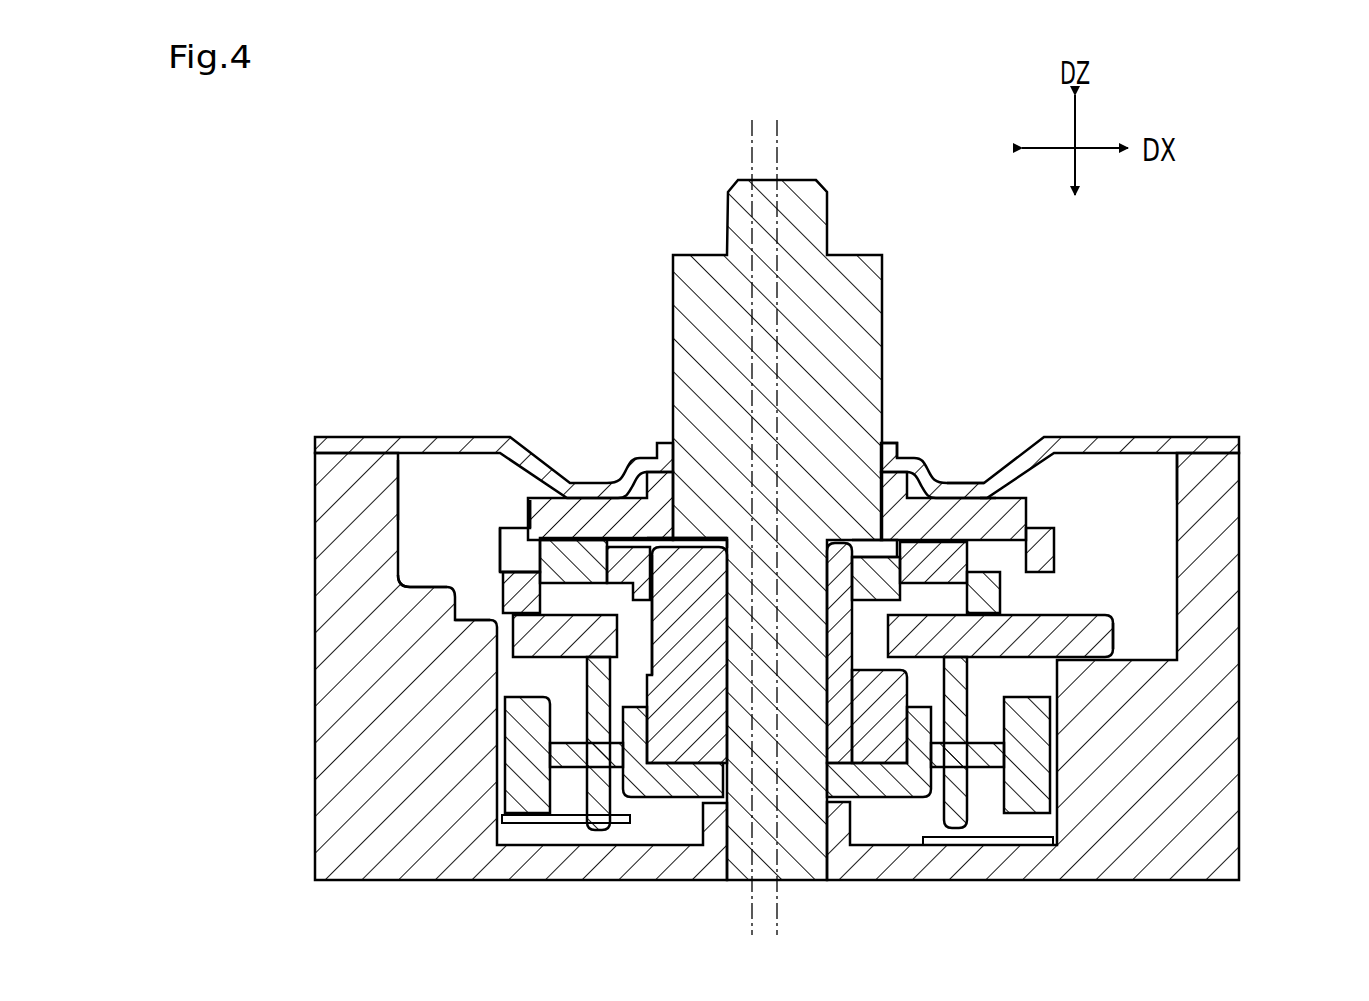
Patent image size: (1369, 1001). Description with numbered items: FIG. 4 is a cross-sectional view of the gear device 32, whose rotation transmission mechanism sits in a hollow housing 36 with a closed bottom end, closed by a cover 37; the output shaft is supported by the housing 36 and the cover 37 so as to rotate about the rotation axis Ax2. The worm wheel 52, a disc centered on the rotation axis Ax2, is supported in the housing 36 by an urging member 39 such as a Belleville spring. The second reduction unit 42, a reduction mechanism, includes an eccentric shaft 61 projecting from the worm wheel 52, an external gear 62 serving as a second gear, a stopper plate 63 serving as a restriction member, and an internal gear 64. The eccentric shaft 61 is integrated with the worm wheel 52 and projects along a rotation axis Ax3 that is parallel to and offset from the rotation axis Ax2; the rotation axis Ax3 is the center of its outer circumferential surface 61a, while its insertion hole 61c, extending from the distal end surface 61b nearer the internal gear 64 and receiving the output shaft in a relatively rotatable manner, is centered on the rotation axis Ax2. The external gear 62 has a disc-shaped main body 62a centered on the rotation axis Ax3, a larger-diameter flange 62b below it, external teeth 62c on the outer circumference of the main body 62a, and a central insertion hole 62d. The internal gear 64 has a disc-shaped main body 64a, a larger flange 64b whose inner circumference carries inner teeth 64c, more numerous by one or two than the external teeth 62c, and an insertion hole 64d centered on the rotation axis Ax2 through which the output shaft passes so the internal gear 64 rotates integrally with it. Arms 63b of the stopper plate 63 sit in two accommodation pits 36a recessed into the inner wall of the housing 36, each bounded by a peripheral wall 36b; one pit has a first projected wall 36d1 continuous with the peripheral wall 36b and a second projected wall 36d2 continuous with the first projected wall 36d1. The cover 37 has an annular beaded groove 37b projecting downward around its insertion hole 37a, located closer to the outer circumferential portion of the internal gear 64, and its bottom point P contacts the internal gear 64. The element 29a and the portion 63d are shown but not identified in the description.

The shaft 29a is at (883, 266).
The gear device 32 is at (521, 256).
The second reduction unit 42 is at (417, 359).
The housing 36 is at (1241, 496).
The accommodation pit 36a is at (1176, 482).
The peripheral wall 36b is at (408, 492).
The first projected wall 36d1 is at (435, 583).
The second projected wall 36d2 is at (473, 617).
The cover 37 is at (1100, 436).
The insertion hole 37a is at (883, 440).
The groove 37b is at (968, 482).
The urging member 39 is at (1002, 846).
The worm wheel 52 is at (1052, 750).
The eccentric shaft 61 is at (853, 640).
The outer circumferential surface 61a is at (852, 700).
The distal end surface 61b is at (704, 600).
The insertion hole 61c is at (826, 700).
The external gear 62 is at (623, 567).
The main body 62a is at (582, 540).
The flange 62b is at (1001, 588).
The external teeth 62c is at (962, 550).
The insertion hole 62d is at (827, 584).
The stopper plate 63 is at (1115, 633).
The arm 63b is at (1118, 655).
The base plate leg 63d is at (587, 675).
The internal gear 64 is at (526, 455).
The main body 64a is at (529, 510).
The flange 64b is at (499, 538).
The inner teeth 64c is at (532, 558).
The insertion hole 64d is at (693, 545).
The bottom point P is at (985, 498).
The rotation axis Ax2 is at (779, 148).
The rotation axis Ax3 is at (750, 148).